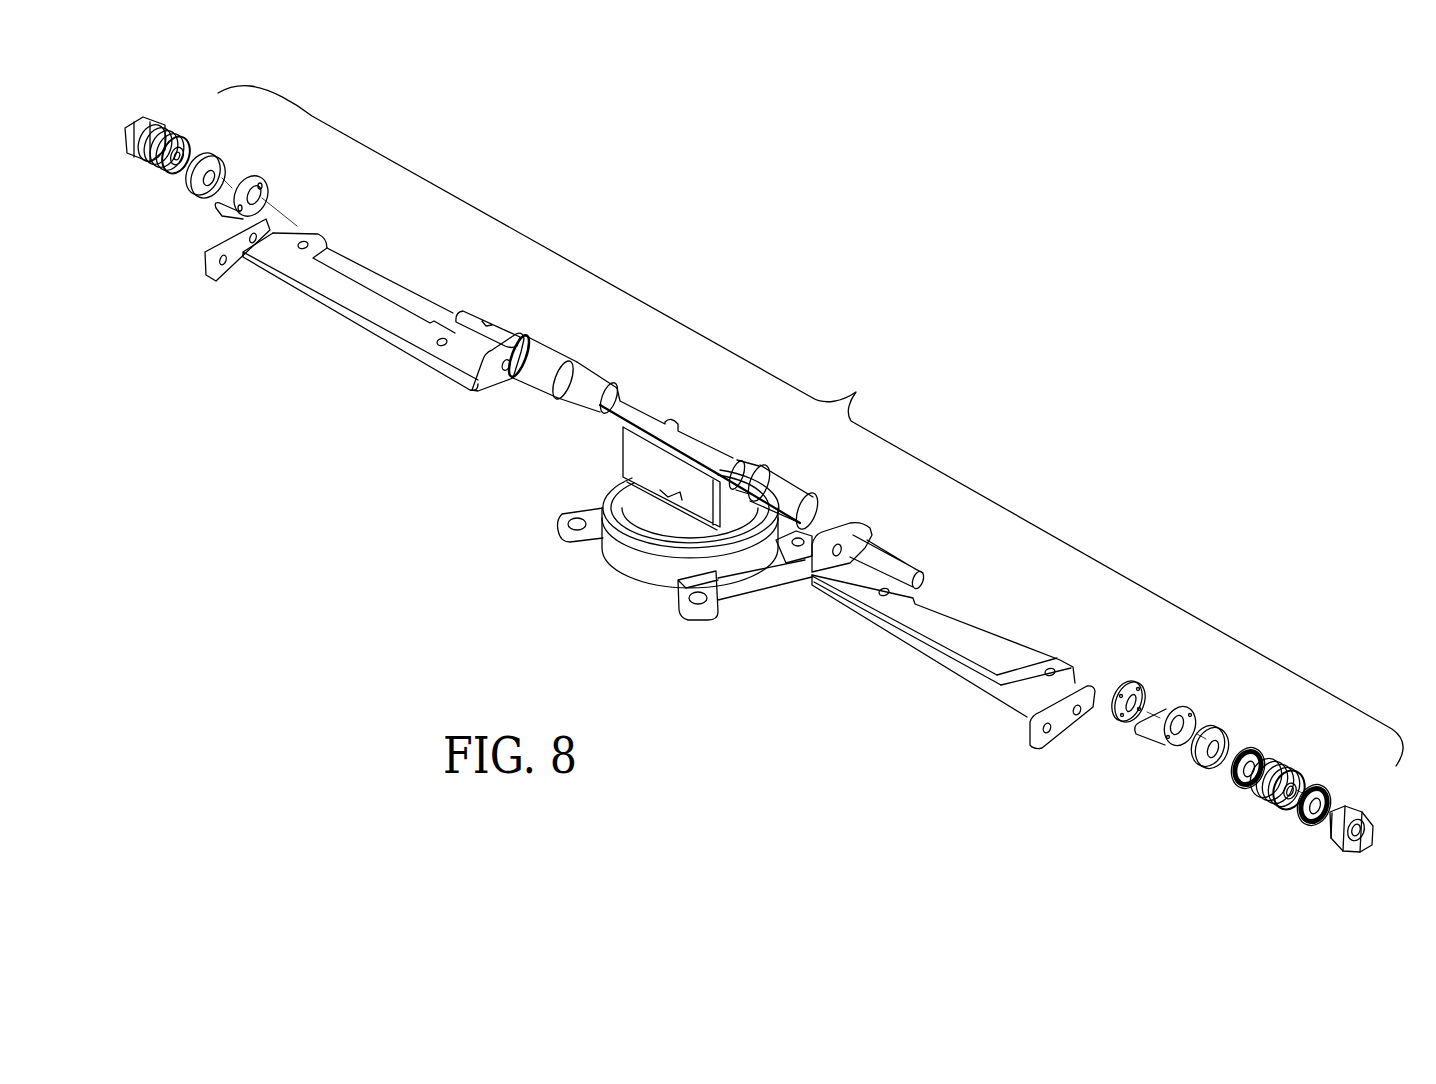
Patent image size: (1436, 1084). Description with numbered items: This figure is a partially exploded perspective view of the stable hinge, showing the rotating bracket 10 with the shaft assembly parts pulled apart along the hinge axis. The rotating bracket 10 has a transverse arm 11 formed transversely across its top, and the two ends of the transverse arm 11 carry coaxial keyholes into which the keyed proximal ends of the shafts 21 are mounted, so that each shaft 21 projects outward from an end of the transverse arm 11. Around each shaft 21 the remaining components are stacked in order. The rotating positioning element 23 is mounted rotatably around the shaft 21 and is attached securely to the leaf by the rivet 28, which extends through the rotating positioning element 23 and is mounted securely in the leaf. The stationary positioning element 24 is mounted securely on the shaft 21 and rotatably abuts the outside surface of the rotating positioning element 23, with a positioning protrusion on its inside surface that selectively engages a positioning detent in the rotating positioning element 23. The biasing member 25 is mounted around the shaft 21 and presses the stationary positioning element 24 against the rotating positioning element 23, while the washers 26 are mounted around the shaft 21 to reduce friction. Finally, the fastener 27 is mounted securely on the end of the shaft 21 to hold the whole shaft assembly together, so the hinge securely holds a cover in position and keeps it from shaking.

The rotating bracket 10 is at (713, 428).
The transverse arm 11 is at (710, 428).
The shaft 21 is at (872, 541).
The rotating positioning element 23 is at (1172, 708).
The stationary positioning element 24 is at (1201, 765).
The biasing member 25 is at (1283, 768).
The washers 26 is at (1257, 752).
The fastener 27 is at (1327, 843).
The rivet 28 is at (1137, 722).